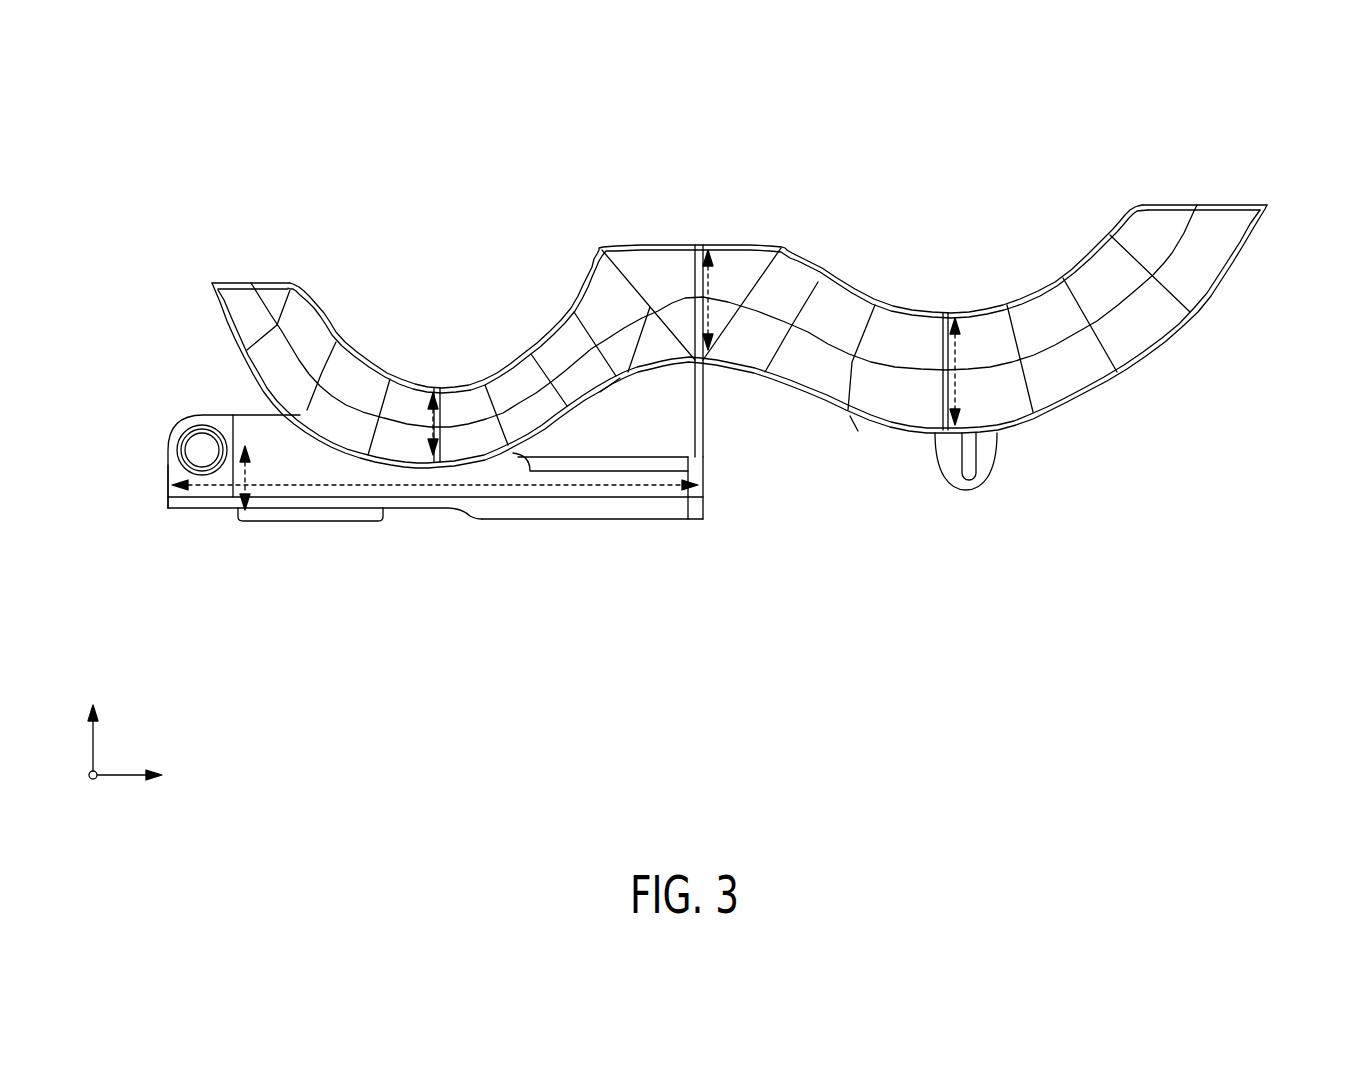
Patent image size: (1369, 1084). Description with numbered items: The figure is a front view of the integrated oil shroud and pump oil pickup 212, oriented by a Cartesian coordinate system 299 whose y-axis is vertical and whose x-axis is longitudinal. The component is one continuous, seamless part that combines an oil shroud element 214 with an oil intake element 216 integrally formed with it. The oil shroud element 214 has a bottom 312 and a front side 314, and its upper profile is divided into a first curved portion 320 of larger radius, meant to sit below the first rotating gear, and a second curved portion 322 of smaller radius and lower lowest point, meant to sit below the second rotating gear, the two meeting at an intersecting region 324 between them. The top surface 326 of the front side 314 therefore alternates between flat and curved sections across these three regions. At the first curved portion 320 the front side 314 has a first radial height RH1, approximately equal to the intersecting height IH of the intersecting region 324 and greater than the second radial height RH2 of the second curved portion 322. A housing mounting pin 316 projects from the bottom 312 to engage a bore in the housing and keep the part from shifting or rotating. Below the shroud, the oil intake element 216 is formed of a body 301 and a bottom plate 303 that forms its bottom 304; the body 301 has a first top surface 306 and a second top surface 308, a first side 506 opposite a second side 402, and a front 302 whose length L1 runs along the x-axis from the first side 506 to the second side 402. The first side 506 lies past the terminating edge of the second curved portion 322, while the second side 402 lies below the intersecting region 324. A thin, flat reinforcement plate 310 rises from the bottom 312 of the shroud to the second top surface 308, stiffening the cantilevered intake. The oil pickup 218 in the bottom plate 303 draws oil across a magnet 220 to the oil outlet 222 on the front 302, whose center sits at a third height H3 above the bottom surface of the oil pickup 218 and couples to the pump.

The integrated oil shroud and pump oil pickup 212 is at (1236, 150).
The oil shroud element 214 is at (1248, 322).
The oil intake element 216 is at (790, 498).
The oil pickup 218 is at (596, 521).
The magnet 220 is at (385, 513).
The oil outlet 222 is at (202, 443).
The Cartesian coordinate system 299 is at (148, 708).
The body 301 is at (168, 452).
The front 302 is at (304, 470).
The bottom plate 303 is at (688, 510).
The bottom 304 is at (468, 513).
The first top surface 306 is at (245, 417).
The second top surface 308 is at (662, 457).
The reinforcement plate 310 is at (666, 427).
The bottom 312 is at (858, 431).
The front side 314 is at (841, 382).
The housing mounting pin 316 is at (997, 450).
The first curved portion 320 is at (1069, 172).
The second curved portion 322 is at (502, 242).
The intersecting region 324 is at (697, 202).
The top surface 326 is at (1163, 205).
The second side 402 is at (705, 478).
The first side 506 is at (168, 473).
The third height H3 is at (237, 503).
The length L1 is at (658, 490).
The intersecting height IH is at (712, 298).
The first radial height RH1 is at (958, 368).
The second radial height RH2 is at (437, 430).